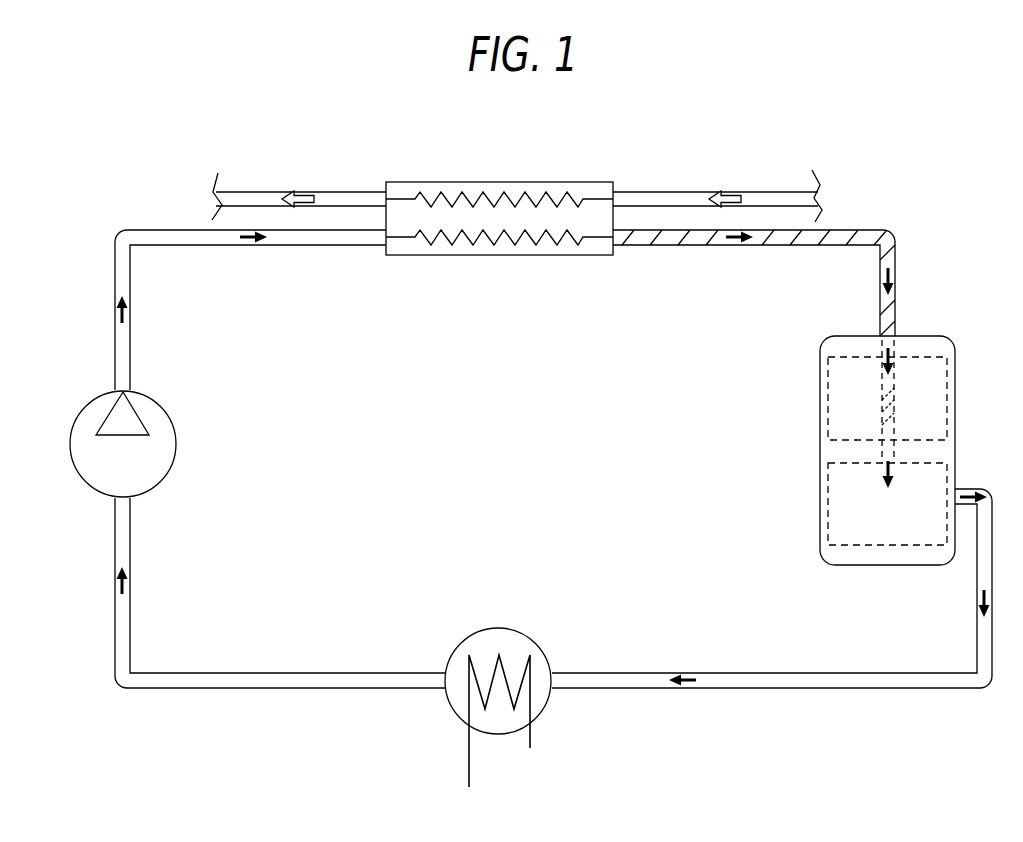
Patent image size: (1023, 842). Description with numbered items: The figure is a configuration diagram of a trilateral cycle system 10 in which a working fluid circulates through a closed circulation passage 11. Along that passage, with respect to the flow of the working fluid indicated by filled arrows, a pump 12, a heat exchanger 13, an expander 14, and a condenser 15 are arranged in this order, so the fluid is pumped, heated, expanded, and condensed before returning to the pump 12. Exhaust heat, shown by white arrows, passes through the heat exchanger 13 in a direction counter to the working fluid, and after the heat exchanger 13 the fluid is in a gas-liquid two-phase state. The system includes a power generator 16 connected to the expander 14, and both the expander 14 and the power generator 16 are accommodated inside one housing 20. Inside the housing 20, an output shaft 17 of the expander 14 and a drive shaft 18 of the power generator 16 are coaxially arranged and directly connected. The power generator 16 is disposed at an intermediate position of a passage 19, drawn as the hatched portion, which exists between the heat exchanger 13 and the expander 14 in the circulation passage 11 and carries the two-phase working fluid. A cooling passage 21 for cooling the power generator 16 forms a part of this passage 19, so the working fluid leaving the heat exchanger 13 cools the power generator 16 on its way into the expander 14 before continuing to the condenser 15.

The trilateral cycle system 10 is at (146, 228).
The circulation passage 11 is at (309, 246).
The pump 12 is at (179, 446).
The heat exchanger 13 is at (497, 257).
The expander 14 is at (821, 493).
The condenser 15 is at (500, 628).
The power generator 16 is at (821, 372).
The output shaft 17 is at (882, 452).
The drive shaft 18 is at (882, 423).
The passage 19 is at (868, 226).
The housing 20 is at (943, 337).
The cooling passage 21 is at (894, 403).